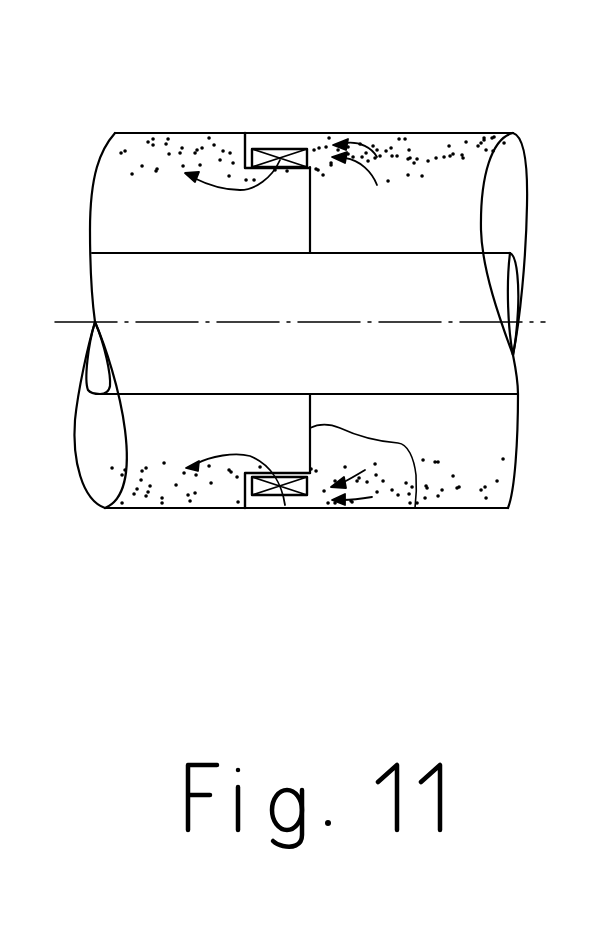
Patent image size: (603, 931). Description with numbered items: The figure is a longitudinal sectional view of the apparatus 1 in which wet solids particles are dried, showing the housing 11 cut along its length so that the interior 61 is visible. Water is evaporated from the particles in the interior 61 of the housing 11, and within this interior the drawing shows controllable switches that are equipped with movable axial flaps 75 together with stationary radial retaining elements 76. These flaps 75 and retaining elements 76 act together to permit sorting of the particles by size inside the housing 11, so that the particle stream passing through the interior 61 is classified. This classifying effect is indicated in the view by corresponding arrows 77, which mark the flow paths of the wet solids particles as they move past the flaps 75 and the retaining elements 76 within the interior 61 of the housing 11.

The roll 1 is at (482, 396).
The housing 11 is at (404, 134).
The interior 61 is at (152, 200).
The movable axial flaps 75 is at (280, 136).
The stationary radial retaining elements 76 is at (415, 508).
The arrows 77 is at (236, 190).